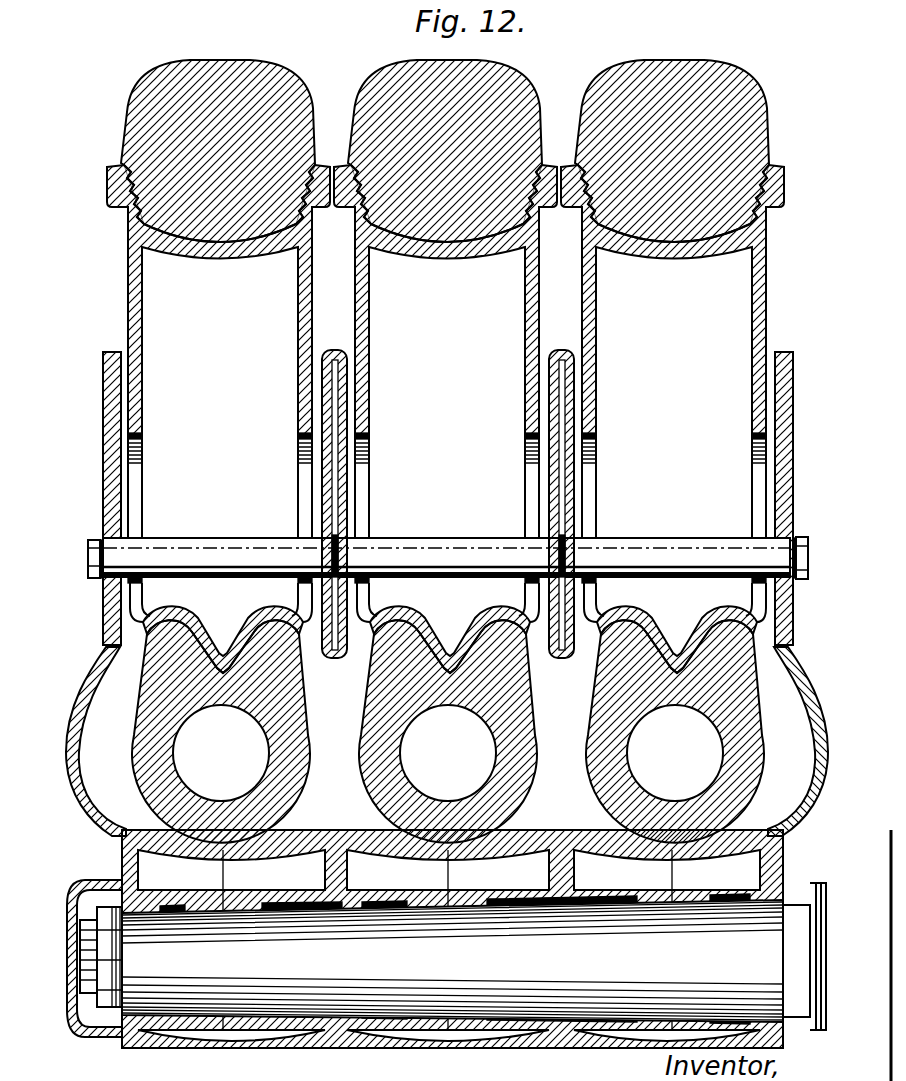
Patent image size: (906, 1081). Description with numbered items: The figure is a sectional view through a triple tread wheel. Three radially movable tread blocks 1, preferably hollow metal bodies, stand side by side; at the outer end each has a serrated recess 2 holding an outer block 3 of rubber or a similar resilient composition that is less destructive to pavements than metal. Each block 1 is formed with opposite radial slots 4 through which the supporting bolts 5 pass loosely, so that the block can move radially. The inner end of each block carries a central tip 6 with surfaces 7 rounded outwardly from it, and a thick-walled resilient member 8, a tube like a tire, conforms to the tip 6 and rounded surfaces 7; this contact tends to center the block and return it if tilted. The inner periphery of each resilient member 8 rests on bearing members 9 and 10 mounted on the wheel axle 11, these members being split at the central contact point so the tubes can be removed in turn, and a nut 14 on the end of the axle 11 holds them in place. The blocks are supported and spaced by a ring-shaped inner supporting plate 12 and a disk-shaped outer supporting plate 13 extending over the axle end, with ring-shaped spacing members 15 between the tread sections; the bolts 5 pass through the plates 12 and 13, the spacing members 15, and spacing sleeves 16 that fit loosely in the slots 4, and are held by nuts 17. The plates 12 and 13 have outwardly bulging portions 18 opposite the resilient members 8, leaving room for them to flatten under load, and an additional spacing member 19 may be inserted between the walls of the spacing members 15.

The tread block 1 is at (130, 288).
The serrated recess 2 is at (120, 155).
The outer block 3 is at (383, 100).
The slot 4 is at (142, 497).
The supporting bolt 5 is at (100, 584).
The central tip 6 is at (223, 636).
The rounded surface 7 is at (184, 612).
The resilient member 8 is at (367, 716).
The bearing member 9 is at (203, 907).
The bearing member 10 is at (263, 897).
The wheel axle 11 is at (515, 962).
The inner supporting plate 12 is at (777, 433).
The outer supporting plate 13 is at (117, 452).
The nut 14 is at (103, 997).
The spacing member 15 is at (333, 350).
The spacing sleeve 16 is at (236, 543).
The nut 17 is at (101, 541).
The outwardly bulging portion 18 is at (70, 734).
The additional spacing member 19 is at (345, 538).